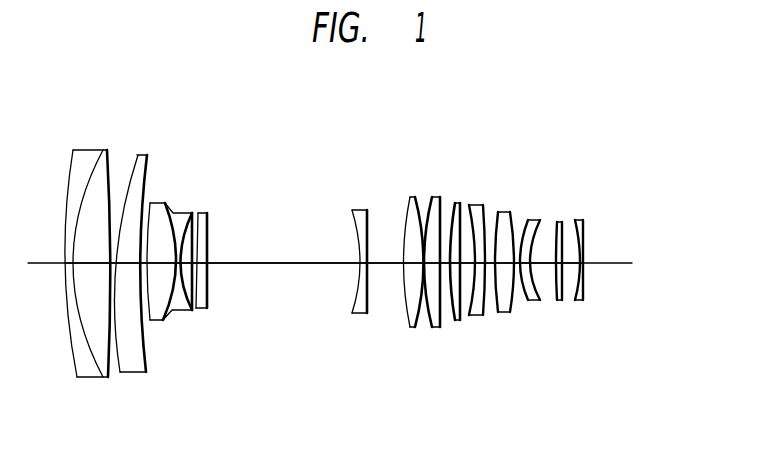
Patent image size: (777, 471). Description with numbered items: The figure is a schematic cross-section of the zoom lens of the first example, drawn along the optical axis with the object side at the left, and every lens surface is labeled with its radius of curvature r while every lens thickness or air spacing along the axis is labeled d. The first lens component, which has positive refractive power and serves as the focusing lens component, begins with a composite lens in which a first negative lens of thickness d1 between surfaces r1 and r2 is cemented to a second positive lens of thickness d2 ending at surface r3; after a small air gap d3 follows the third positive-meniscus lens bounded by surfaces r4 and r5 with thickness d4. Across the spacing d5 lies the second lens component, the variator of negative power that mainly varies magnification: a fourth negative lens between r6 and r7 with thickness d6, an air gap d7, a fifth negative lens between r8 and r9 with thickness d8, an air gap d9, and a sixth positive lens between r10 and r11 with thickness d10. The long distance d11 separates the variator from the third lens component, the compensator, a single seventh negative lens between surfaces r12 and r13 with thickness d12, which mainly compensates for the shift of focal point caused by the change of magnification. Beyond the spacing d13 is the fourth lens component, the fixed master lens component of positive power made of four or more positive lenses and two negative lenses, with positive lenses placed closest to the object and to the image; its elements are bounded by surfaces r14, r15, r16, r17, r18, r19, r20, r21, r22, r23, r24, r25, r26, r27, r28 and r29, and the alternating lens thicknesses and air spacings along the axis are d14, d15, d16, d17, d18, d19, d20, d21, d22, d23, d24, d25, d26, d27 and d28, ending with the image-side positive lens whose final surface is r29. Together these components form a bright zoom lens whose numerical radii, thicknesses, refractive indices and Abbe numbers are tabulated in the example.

The radius of curvature of first lens surface r1 is at (73, 150).
The radius of curvature of second lens surface r2 is at (103, 150).
The radius of curvature of third lens surface r3 is at (107, 150).
The radius of curvature of fourth lens surface r4 is at (138, 155).
The radius of curvature of fifth lens surface r5 is at (147, 155).
The radius of curvature of sixth lens surface r6 is at (150, 203).
The radius of curvature of seventh lens surface r7 is at (165, 203).
The radius of curvature of eighth lens surface r8 is at (173, 213).
The radius of curvature of ninth lens surface r9 is at (192, 213).
The radius of curvature of tenth lens surface r10 is at (198, 213).
The radius of curvature of eleventh lens surface r11 is at (207, 213).
The radius of curvature of twelfth lens surface r12 is at (352, 210).
The radius of curvature of thirteenth lens surface r13 is at (367, 210).
The radius of curvature of fourteenth lens surface r14 is at (410, 197).
The radius of curvature of fifteenth lens surface r15 is at (423, 197).
The radius of curvature of sixteenth lens surface r16 is at (432, 197).
The radius of curvature of seventeenth lens surface r17 is at (440, 197).
The radius of curvature of eighteenth lens surface r18 is at (455, 203).
The radius of curvature of nineteenth lens surface r19 is at (460, 203).
The radius of curvature of twentieth lens surface r20 is at (469, 205).
The radius of curvature of twenty-first lens surface r21 is at (483, 205).
The radius of curvature of twenty-second lens surface r22 is at (498, 212).
The radius of curvature of twenty-third lens surface r23 is at (510, 212).
The radius of curvature of twenty-fourth lens surface r24 is at (528, 220).
The radius of curvature of twenty-fifth lens surface r25 is at (540, 220).
The radius of curvature of twenty-sixth lens surface r26 is at (557, 222).
The radius of curvature of twenty-seventh lens surface r27 is at (562, 222).
The radius of curvature of twenty-eighth lens surface r28 is at (575, 220).
The radius of curvature of twenty-ninth lens surface r29 is at (583, 220).
The thickness of first negative lens d1 is at (68, 263).
The thickness of second positive lens d2 is at (90, 263).
The distance between second and third lenses d3 is at (114, 263).
The thickness of third positive-meniscus lens d4 is at (128, 263).
The distance between first and second lens components d5 is at (144, 263).
The thickness of fourth negative lens d6 is at (160, 263).
The distance between fourth and fifth lenses d7 is at (178, 263).
The thickness of fifth negative lens d8 is at (186, 263).
The distance between fifth and sixth lenses d9 is at (195, 263).
The thickness of sixth positive lens d10 is at (203, 263).
The distance between second and third lens components d11 is at (258, 263).
The thickness of seventh negative lens d12 is at (360, 263).
The distance between third and fourth lens components d13 is at (385, 263).
The thickness of first master lens d14 is at (413, 263).
The distance between master lenses d15 is at (424, 263).
The thickness of master lens d16 is at (432, 263).
The distance between master lenses d17 is at (445, 263).
The thickness of master lens d18 is at (455, 263).
The distance between master lenses d19 is at (468, 263).
The thickness of master lens d20 is at (480, 263).
The distance between master lenses d21 is at (490, 263).
The thickness of master lens d22 is at (505, 263).
The distance between master lenses d23 is at (517, 263).
The thickness of master lens d24 is at (525, 263).
The distance between master lenses d25 is at (543, 263).
The thickness of master lens d26 is at (559, 263).
The distance between master lenses d27 is at (571, 263).
The thickness of last master lens d28 is at (582, 263).